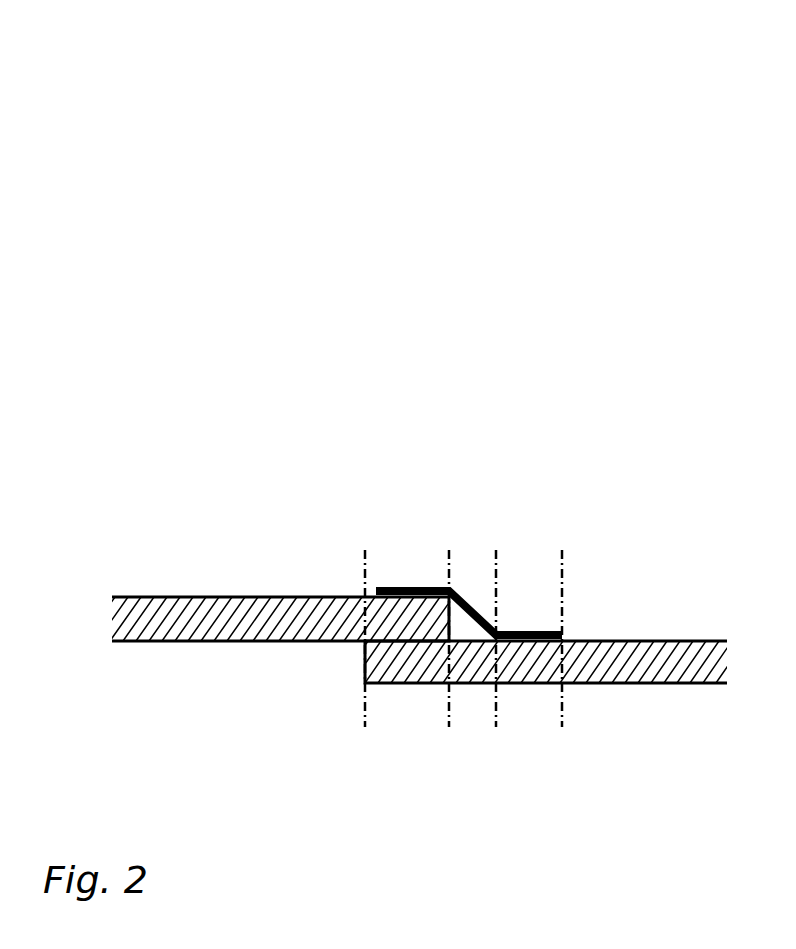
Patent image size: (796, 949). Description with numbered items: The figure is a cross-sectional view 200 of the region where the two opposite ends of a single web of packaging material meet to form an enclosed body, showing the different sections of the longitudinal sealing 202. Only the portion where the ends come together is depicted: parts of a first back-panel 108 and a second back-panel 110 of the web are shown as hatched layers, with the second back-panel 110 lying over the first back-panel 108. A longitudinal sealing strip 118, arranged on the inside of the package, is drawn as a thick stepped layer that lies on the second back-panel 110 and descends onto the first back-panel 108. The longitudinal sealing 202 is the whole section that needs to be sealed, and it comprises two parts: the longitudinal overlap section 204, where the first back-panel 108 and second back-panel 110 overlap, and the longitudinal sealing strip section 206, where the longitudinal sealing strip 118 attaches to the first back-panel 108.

The cross-sectional view of battery structure 200 is at (44, 151).
The second back-panel 110 is at (208, 597).
The first back-panel 108 is at (686, 640).
The longitudinal sealing strip 118 is at (550, 630).
The longitudinal overlap section 204 is at (365, 545).
The longitudinal sealing strip section 206 is at (496, 545).
The longitudinal sealing 202 is at (365, 748).